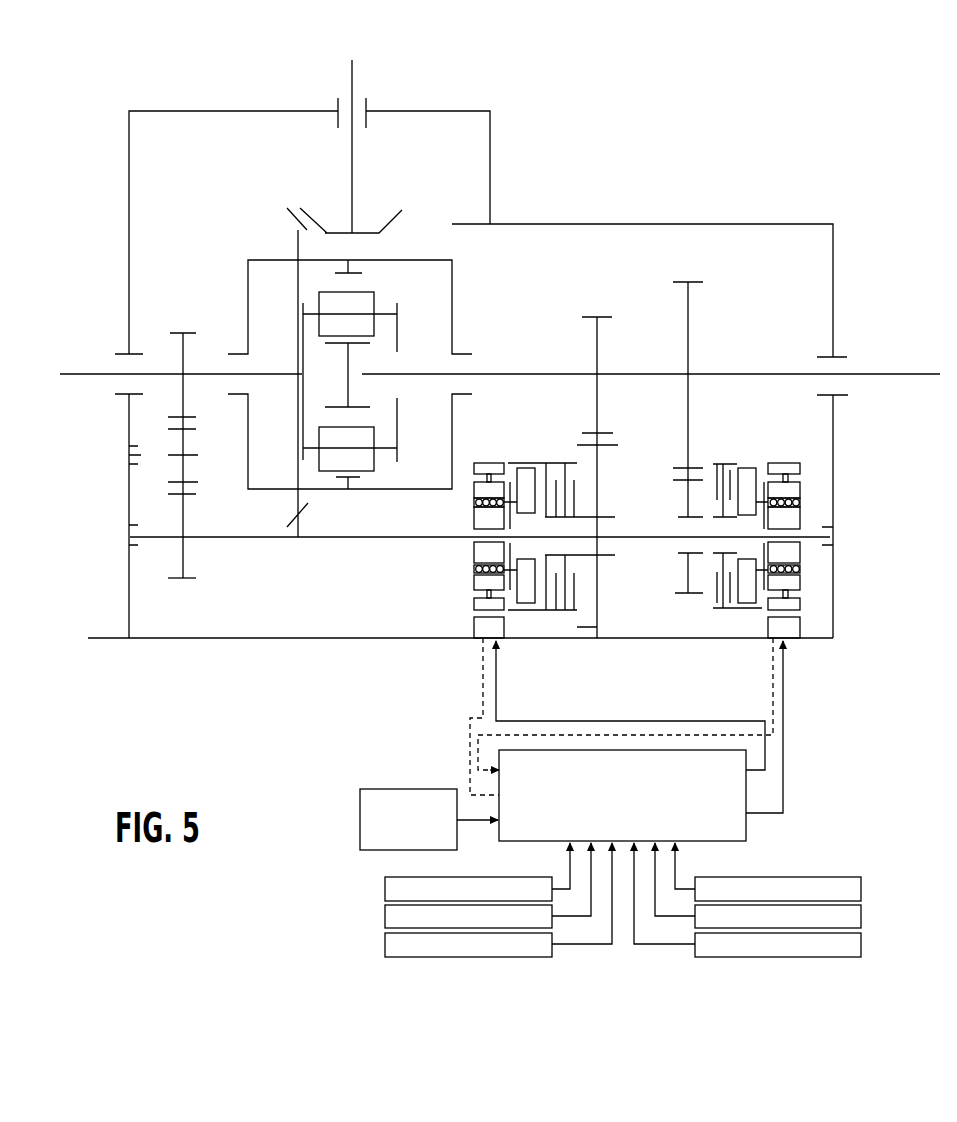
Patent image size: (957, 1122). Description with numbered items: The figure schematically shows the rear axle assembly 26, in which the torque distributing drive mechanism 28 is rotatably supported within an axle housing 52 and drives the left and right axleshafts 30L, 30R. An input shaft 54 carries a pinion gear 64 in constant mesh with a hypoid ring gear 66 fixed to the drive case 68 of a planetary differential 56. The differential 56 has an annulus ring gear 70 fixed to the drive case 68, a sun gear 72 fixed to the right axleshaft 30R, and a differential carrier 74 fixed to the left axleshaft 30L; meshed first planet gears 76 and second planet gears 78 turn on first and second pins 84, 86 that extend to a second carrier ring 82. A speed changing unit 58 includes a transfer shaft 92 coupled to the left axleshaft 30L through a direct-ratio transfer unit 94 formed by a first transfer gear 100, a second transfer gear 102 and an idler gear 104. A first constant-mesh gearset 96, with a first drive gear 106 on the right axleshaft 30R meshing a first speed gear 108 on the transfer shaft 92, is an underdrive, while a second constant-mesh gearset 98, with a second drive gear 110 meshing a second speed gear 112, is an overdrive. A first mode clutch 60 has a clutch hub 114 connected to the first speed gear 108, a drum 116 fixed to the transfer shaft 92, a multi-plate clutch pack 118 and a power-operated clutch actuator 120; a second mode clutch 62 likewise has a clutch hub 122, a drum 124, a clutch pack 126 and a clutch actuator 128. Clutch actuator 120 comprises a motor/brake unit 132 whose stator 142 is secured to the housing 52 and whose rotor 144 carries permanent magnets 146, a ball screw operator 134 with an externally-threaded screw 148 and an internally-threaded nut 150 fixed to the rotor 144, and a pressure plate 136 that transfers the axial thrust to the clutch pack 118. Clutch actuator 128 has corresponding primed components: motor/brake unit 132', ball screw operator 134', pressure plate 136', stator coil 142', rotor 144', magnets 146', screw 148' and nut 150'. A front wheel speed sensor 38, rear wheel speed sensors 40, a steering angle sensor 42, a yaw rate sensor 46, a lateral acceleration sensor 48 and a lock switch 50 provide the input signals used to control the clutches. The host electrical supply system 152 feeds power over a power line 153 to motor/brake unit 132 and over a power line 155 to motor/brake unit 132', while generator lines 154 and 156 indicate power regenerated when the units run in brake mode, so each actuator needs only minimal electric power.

The rear axle assembly 26 is at (886, 84).
The drive mechanism 28 is at (733, 130).
The left axleshaft 30L is at (91, 360).
The right axleshaft 30R is at (910, 372).
The front wheel speed sensor 38 is at (385, 890).
The rear wheel speed sensors 40 is at (385, 917).
The steering angle sensor 42 is at (385, 944).
The yaw rate sensor 46 is at (862, 891).
The lateral acceleration sensor 48 is at (862, 918).
The lock switch 50 is at (862, 945).
The axle housing 52 is at (835, 465).
The input shaft 54 is at (353, 73).
The differential 56 is at (484, 266).
The speed changing unit 58 is at (733, 829).
The first mode clutch 60 is at (503, 452).
The second mode clutch 62 is at (747, 473).
The pinion gear 64 is at (388, 222).
The hypoid ring gear 66 is at (308, 505).
The drive case 68 is at (454, 289).
The annulus ring gear 70 is at (352, 275).
The sun gear 72 is at (350, 385).
The differential carrier 74 is at (300, 337).
The first planet gears 76 is at (330, 302).
The second planet gears 78 is at (365, 462).
The second carrier ring 82 is at (397, 433).
The first pins 84 is at (383, 318).
The second pins 86 is at (384, 449).
The transfer shaft 92 is at (377, 538).
The transfer unit 94 is at (146, 557).
The first constant-mesh gearset 96 is at (629, 444).
The second constant-mesh gearset 98 is at (699, 457).
The first transfer gear 100 is at (191, 578).
The second transfer gear 102 is at (190, 332).
The idler gear 104 is at (190, 483).
The first drive gear 106 is at (605, 316).
The first speed gear 108 is at (598, 617).
The second drive gear 110 is at (690, 310).
The second speed gear 112 is at (695, 594).
The clutch hub 114 is at (602, 517).
The drum 116 is at (515, 463).
The multi-plate clutch pack 118 is at (555, 598).
The power-operated clutch actuator 120 is at (419, 567).
The clutch hub 122 is at (686, 548).
The drum 124 is at (750, 612).
The multi-plate clutch pack 126 is at (750, 467).
The power-operated clutch actuator 128 is at (852, 576).
The motor/brake unit 132 is at (435, 653).
The motor/brake unit 132' is at (864, 647).
The ball screw operator 134 is at (418, 585).
The ball screw operator 134' is at (838, 540).
The pressure plate 136 is at (548, 462).
The pressure plate 136' is at (852, 427).
The stator 142 is at (477, 647).
The stator coil 142' is at (818, 685).
The rotor 144 is at (479, 460).
The rotor 144' is at (796, 460).
The permanent magnets 146 is at (453, 587).
The permanent magnets 146' is at (827, 600).
The externally-threaded screw 148 is at (470, 532).
The screw 148' is at (835, 535).
The internally-threaded nut 150 is at (466, 564).
The nut 150' is at (852, 496).
The host electrical supply system 152 is at (362, 820).
The power line 153 is at (497, 675).
The generator line 154 is at (482, 700).
The power line 155 is at (785, 698).
The generator line 156 is at (778, 725).